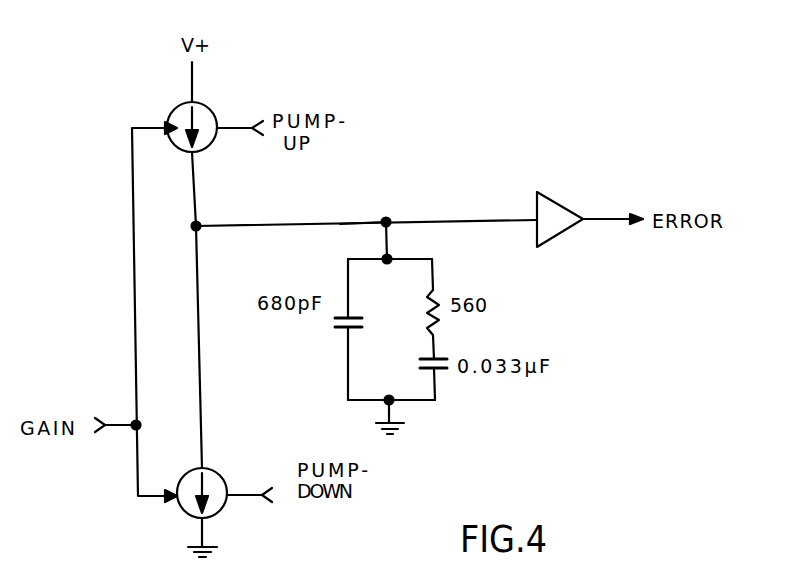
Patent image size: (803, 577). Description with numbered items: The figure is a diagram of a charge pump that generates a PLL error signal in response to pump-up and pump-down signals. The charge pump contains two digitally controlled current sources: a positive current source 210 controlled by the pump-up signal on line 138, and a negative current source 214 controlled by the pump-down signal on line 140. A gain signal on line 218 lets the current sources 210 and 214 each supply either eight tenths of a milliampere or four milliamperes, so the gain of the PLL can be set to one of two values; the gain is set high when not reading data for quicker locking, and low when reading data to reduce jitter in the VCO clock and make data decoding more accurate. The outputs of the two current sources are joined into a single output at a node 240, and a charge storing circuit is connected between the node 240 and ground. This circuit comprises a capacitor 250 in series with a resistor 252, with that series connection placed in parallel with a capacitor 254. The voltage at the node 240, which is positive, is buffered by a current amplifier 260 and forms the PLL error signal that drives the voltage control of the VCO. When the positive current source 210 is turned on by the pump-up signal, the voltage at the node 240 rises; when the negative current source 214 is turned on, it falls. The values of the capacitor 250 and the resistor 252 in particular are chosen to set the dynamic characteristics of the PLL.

The positive current source 210 is at (177, 105).
The line carrying the pump-up signal 138 is at (233, 127).
The line carrying the gain signal 218 is at (117, 425).
The negative current source 214 is at (207, 468).
The line carrying the pump-down signal 140 is at (243, 490).
The node 240 is at (363, 222).
The current amplifier 260 is at (547, 193).
The resistor 252 is at (441, 320).
The capacitor 254 is at (338, 332).
The capacitor 250 is at (437, 370).